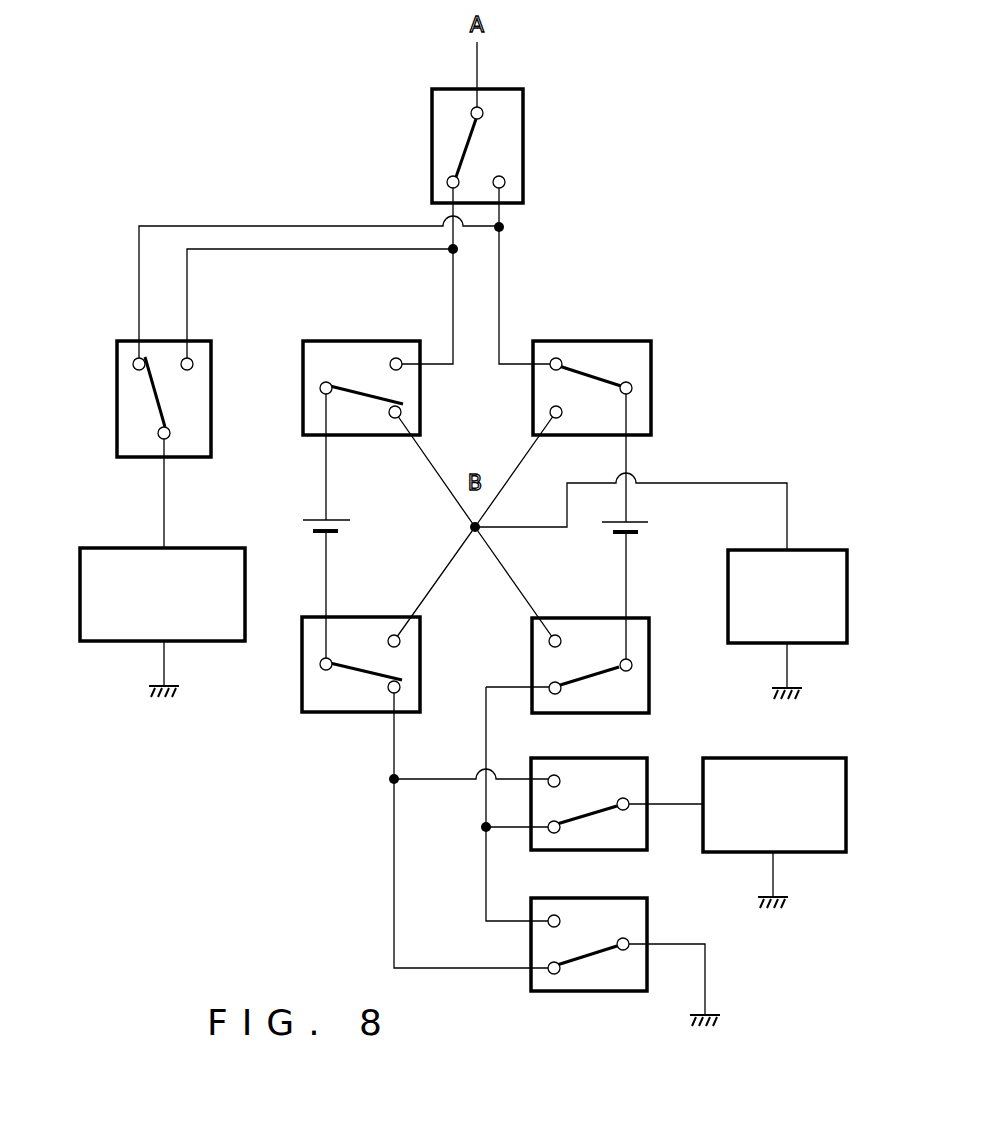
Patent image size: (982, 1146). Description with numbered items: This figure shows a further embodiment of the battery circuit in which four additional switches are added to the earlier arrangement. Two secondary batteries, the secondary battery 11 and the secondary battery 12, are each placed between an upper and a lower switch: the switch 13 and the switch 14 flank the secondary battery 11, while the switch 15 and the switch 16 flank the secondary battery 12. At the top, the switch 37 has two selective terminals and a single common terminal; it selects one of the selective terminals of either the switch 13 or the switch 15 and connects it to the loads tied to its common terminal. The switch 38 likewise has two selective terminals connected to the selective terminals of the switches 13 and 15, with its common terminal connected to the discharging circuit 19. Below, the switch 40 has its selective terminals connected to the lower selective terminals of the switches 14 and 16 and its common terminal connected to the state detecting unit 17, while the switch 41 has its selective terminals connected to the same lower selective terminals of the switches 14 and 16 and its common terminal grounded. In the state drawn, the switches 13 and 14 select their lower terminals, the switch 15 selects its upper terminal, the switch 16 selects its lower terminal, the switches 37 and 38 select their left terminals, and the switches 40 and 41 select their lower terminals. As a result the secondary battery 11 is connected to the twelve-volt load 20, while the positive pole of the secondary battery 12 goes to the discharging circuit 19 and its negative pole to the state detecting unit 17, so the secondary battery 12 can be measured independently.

The switch 37 is at (523, 128).
The switch 38 is at (117, 375).
The switch 13 is at (362, 341).
The switch 15 is at (592, 341).
The switch 14 is at (360, 617).
The switch 16 is at (633, 618).
The switch 40 is at (595, 758).
The switch 41 is at (590, 898).
The secondary battery 11 is at (340, 520).
The secondary battery 12 is at (635, 522).
The discharging circuit 19 is at (143, 548).
The 12V-load 20 is at (805, 550).
The state detecting unit 17 is at (795, 758).